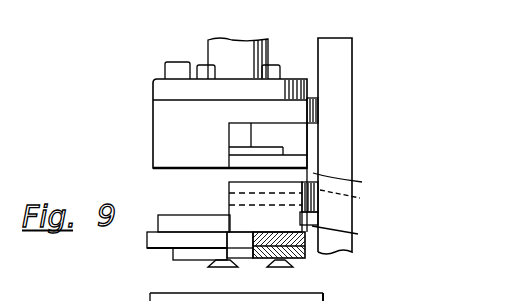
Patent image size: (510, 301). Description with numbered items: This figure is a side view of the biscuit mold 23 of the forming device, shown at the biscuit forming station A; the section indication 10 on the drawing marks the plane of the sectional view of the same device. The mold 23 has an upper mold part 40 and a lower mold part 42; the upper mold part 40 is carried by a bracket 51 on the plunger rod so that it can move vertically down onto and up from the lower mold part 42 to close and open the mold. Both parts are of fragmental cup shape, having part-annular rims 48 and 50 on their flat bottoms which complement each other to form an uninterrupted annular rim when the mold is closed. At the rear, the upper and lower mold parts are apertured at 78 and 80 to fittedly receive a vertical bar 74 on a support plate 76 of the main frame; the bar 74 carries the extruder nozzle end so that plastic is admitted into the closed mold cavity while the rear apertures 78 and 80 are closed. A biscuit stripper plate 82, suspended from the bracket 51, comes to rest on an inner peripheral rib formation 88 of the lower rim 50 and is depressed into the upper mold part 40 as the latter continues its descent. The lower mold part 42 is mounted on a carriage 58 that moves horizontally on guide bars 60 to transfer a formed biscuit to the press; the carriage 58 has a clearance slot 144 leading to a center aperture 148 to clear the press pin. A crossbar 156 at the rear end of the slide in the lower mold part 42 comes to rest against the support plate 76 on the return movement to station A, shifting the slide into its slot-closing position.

The biscuit forming station A is at (171, 49).
The section line 10 is at (141, 178).
The mold 23 is at (149, 218).
The upper mold part 40 is at (166, 111).
The lower mold part 42 is at (266, 218).
The part-annular rim 48 is at (186, 141).
The part-annular rim 50 is at (309, 221).
The bracket 51 is at (245, 83).
The carriage 58 is at (151, 251).
The guide bars 60 is at (140, 270).
The vertical bar 74 is at (351, 177).
The support plate 76 is at (328, 50).
The rear aperture 78 is at (321, 102).
The rear aperture 80 is at (354, 205).
The biscuit stripper plate 82 is at (240, 164).
The inner peripheral rib formation 88 is at (229, 192).
The clearance slot 144 is at (185, 240).
The center aperture 148 is at (242, 240).
The crossbar 156 is at (356, 237).